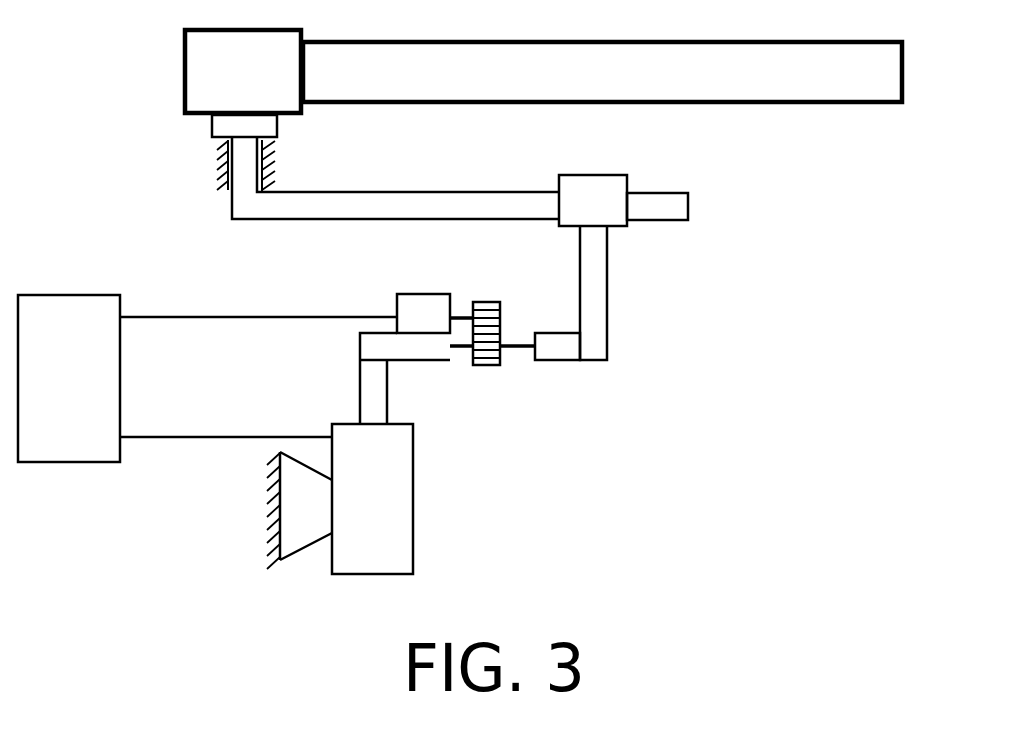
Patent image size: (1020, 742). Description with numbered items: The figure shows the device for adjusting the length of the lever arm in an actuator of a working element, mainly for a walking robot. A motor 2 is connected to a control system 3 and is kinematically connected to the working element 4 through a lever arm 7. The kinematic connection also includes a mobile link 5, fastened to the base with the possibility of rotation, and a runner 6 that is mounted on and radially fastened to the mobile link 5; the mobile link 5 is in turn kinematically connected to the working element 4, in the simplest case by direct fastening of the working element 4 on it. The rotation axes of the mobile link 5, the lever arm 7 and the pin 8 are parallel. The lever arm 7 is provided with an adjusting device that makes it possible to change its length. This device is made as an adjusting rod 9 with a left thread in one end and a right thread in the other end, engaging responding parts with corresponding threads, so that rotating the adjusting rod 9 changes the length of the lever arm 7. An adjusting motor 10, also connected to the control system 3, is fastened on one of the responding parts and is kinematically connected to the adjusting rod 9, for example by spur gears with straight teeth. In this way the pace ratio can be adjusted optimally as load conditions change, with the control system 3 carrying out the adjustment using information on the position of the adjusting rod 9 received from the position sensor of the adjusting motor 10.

The motor 2 is at (387, 497).
The control system 3 is at (59, 397).
The working element 4 is at (828, 73).
The mobile link 5 is at (663, 208).
The runner 6 is at (595, 212).
The lever arm 7 is at (562, 347).
The pin 8 is at (592, 292).
The adjusting rod 9 is at (518, 350).
The adjusting motor 10 is at (412, 307).